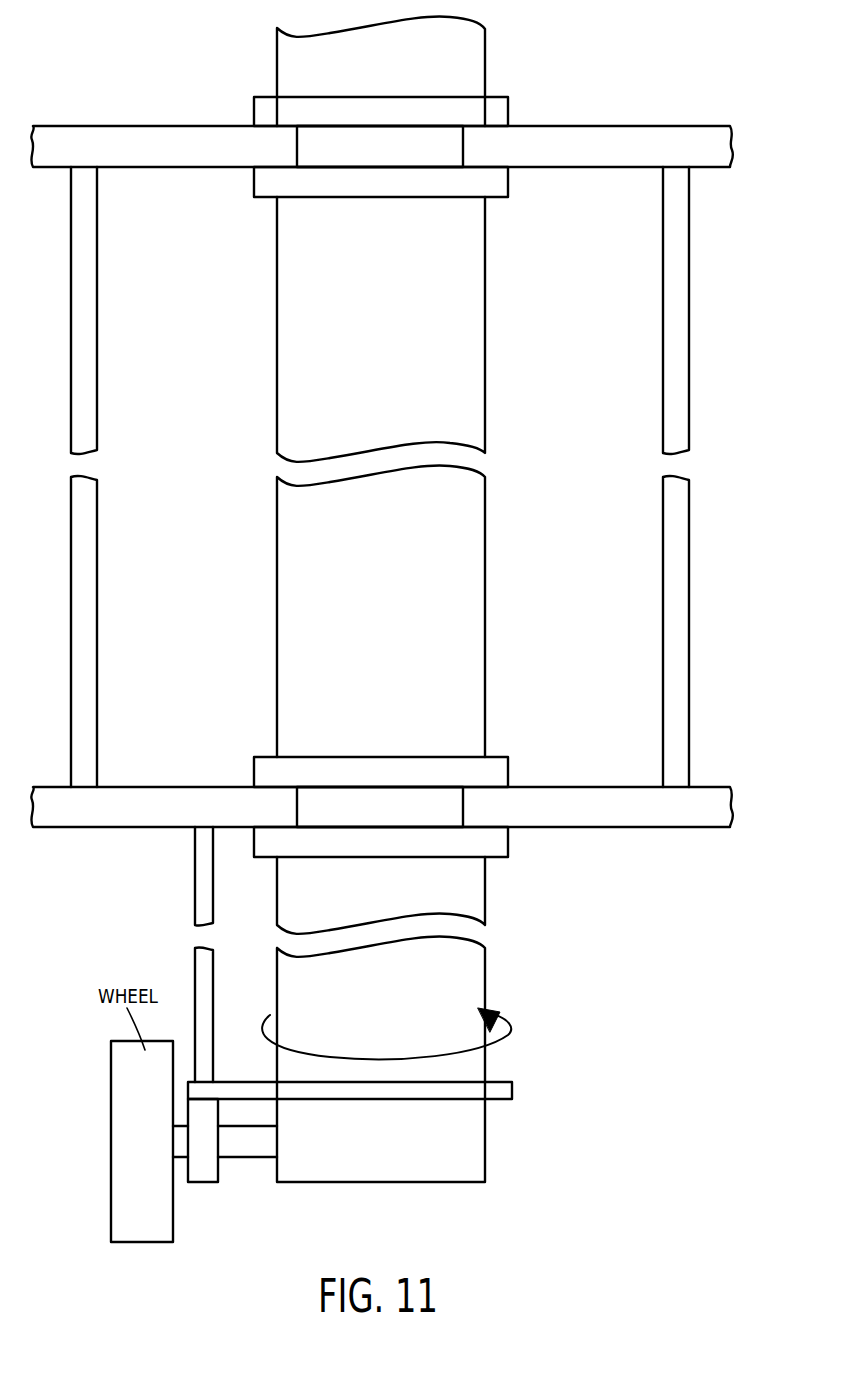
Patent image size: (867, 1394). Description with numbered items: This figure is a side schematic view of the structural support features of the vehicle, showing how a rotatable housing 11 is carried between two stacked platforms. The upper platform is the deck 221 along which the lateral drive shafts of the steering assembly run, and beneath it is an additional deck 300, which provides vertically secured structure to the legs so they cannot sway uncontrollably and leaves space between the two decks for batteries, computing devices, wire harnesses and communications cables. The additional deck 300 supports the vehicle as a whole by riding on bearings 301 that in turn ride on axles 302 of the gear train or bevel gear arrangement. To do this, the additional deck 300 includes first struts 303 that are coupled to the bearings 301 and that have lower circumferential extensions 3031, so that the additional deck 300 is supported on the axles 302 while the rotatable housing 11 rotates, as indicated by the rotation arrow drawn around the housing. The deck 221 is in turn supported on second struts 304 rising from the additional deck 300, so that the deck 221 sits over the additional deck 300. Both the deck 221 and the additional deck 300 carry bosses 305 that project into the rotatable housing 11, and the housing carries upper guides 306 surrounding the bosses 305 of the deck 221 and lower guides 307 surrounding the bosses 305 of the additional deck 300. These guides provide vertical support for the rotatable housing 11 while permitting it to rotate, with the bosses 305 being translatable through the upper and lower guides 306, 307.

The rotatable housing 11 is at (478, 992).
The deck 221 is at (642, 142).
The additional deck 300 is at (620, 823).
The bearings 301 is at (203, 1175).
The axles 302 is at (248, 1148).
The first struts 303 is at (202, 897).
The lower circumferential extensions 3031 is at (503, 1093).
The second struts 304 is at (90, 547).
The bosses 305 is at (379, 154).
The upper guides 306 is at (508, 107).
The lower guides 307 is at (508, 773).